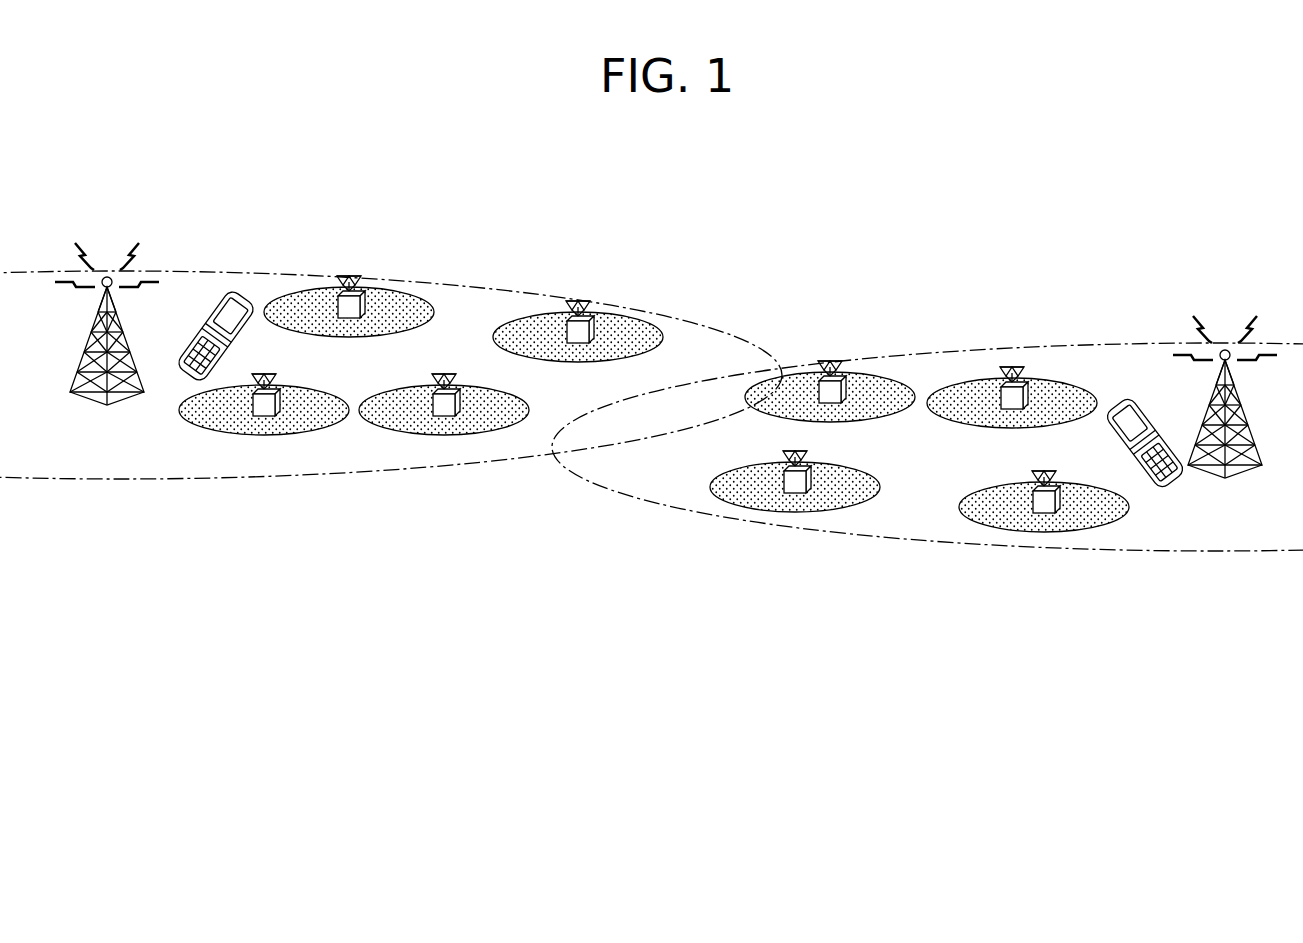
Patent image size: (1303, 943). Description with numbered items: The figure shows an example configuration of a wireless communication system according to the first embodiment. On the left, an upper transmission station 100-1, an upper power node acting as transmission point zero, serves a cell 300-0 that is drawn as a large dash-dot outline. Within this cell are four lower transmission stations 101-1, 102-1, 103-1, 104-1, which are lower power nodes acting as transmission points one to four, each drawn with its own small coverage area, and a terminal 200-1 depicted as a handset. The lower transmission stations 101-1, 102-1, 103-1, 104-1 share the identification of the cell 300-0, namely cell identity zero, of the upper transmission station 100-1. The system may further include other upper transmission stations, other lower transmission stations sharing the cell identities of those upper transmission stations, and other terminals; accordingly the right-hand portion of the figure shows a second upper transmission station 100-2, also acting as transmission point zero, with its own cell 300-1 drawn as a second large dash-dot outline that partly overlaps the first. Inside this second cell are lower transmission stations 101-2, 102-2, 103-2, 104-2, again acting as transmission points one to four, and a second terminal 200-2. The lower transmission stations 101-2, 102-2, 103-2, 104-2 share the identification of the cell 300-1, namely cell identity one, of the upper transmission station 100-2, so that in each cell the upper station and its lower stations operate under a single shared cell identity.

The upper transmission station 100-1 is at (90, 396).
The upper transmission station 100-2 is at (1208, 470).
The lower transmission station 101-1 is at (372, 300).
The lower transmission station 102-1 is at (605, 322).
The lower transmission station 103-1 is at (264, 421).
The lower transmission station 104-1 is at (446, 421).
The lower transmission station 101-2 is at (992, 402).
The lower transmission station 102-2 is at (850, 385).
The lower transmission station 103-2 is at (795, 498).
The lower transmission station 104-2 is at (1040, 520).
The terminal 200-1 is at (229, 296).
The terminal 200-2 is at (1147, 410).
The cell 300-0 is at (152, 479).
The cell 300-1 is at (1222, 551).